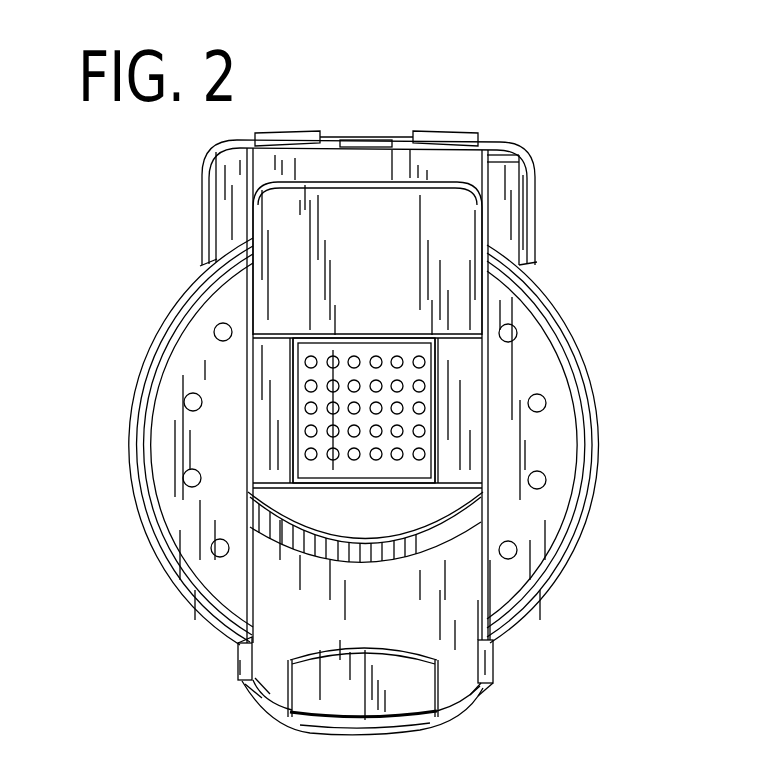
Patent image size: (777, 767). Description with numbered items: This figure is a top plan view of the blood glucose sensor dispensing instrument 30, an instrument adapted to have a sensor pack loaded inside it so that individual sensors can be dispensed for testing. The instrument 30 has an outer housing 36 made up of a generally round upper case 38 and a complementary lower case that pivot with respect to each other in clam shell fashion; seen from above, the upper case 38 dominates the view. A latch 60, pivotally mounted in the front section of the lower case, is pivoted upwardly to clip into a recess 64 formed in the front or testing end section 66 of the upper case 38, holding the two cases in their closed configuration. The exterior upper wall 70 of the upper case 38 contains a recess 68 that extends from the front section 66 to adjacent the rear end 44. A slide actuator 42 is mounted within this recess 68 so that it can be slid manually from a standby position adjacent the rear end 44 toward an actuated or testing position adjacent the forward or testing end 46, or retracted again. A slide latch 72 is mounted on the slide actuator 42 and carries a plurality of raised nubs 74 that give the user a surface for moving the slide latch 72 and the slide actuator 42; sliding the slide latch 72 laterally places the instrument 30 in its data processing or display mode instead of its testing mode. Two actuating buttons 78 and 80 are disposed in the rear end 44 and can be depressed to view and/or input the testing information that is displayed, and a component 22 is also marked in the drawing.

The housing 22 is at (485, 378).
The blood glucose sensor dispensing instrument 30 is at (657, 297).
The outer housing 36 is at (118, 389).
The upper case 38 is at (572, 432).
The slide actuator 42 is at (468, 498).
The rear end 44 is at (505, 143).
The forward or testing end 46 is at (492, 690).
The latch 60 is at (390, 665).
The recess 64 is at (470, 720).
The front or testing end section 66 is at (260, 715).
The recess 68 is at (478, 605).
The exterior upper wall 70 is at (552, 363).
The slide latch 72 is at (378, 350).
The raised nubs 74 is at (418, 360).
The actuating button 78 is at (288, 132).
The actuating button 80 is at (450, 132).